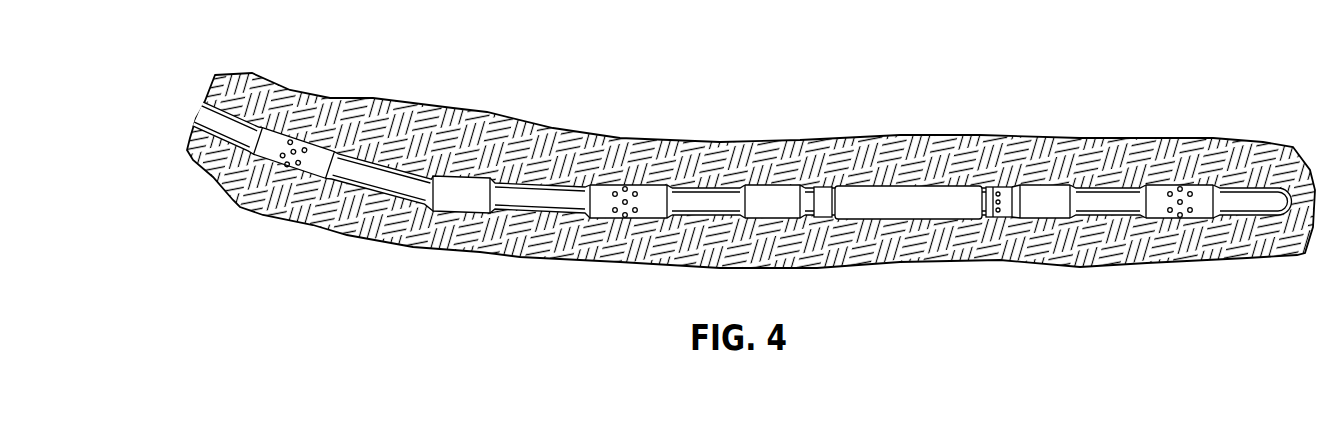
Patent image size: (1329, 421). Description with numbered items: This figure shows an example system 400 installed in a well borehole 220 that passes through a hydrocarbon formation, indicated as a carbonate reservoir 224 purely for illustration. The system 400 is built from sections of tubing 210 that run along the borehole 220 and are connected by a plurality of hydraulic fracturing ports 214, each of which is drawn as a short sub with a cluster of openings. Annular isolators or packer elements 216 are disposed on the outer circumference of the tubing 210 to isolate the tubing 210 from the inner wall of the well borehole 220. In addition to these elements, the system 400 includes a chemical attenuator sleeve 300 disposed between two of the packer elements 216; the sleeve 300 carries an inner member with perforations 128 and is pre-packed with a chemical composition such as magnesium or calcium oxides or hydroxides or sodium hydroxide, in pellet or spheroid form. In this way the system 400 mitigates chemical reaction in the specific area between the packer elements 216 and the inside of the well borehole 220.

The system 400 is at (852, 50).
The carbonate reservoir 224 is at (413, 113).
The tubing 210 is at (380, 177).
The hydraulic fracturing port 214 is at (608, 213).
The well borehole 220 is at (707, 195).
The annular isolator or packer element 216 is at (787, 190).
The chemical attenuator sleeve 300 is at (910, 188).
The perforation 128 is at (997, 219).